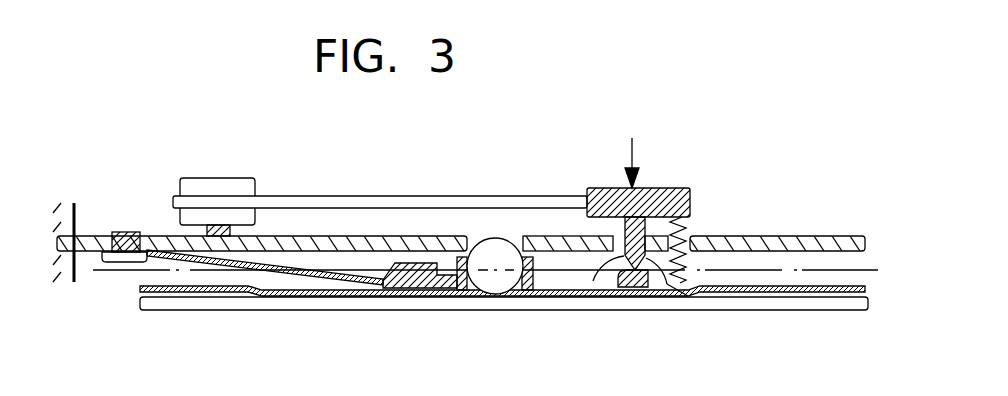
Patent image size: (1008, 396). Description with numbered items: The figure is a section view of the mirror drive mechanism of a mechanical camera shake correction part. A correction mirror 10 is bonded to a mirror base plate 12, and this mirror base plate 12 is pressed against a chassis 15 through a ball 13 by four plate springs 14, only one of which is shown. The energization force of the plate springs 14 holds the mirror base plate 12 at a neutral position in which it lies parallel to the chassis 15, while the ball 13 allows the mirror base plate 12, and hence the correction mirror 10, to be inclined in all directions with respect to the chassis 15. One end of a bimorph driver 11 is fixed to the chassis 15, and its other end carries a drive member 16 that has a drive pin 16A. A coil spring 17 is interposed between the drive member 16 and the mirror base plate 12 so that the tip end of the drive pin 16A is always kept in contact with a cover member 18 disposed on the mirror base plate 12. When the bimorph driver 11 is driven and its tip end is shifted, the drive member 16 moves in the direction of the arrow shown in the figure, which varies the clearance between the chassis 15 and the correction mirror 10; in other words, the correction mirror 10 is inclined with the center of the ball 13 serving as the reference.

The correction mirror 10 is at (380, 310).
The bimorph driver 11 is at (472, 195).
The mirror base plate 12 is at (865, 283).
The ball 13 is at (490, 283).
The plate spring 14 is at (287, 275).
The chassis 15 is at (797, 236).
The drive member 16 is at (680, 188).
The drive pin 16A is at (600, 272).
The coil spring 17 is at (692, 260).
The cover member 18 is at (672, 285).